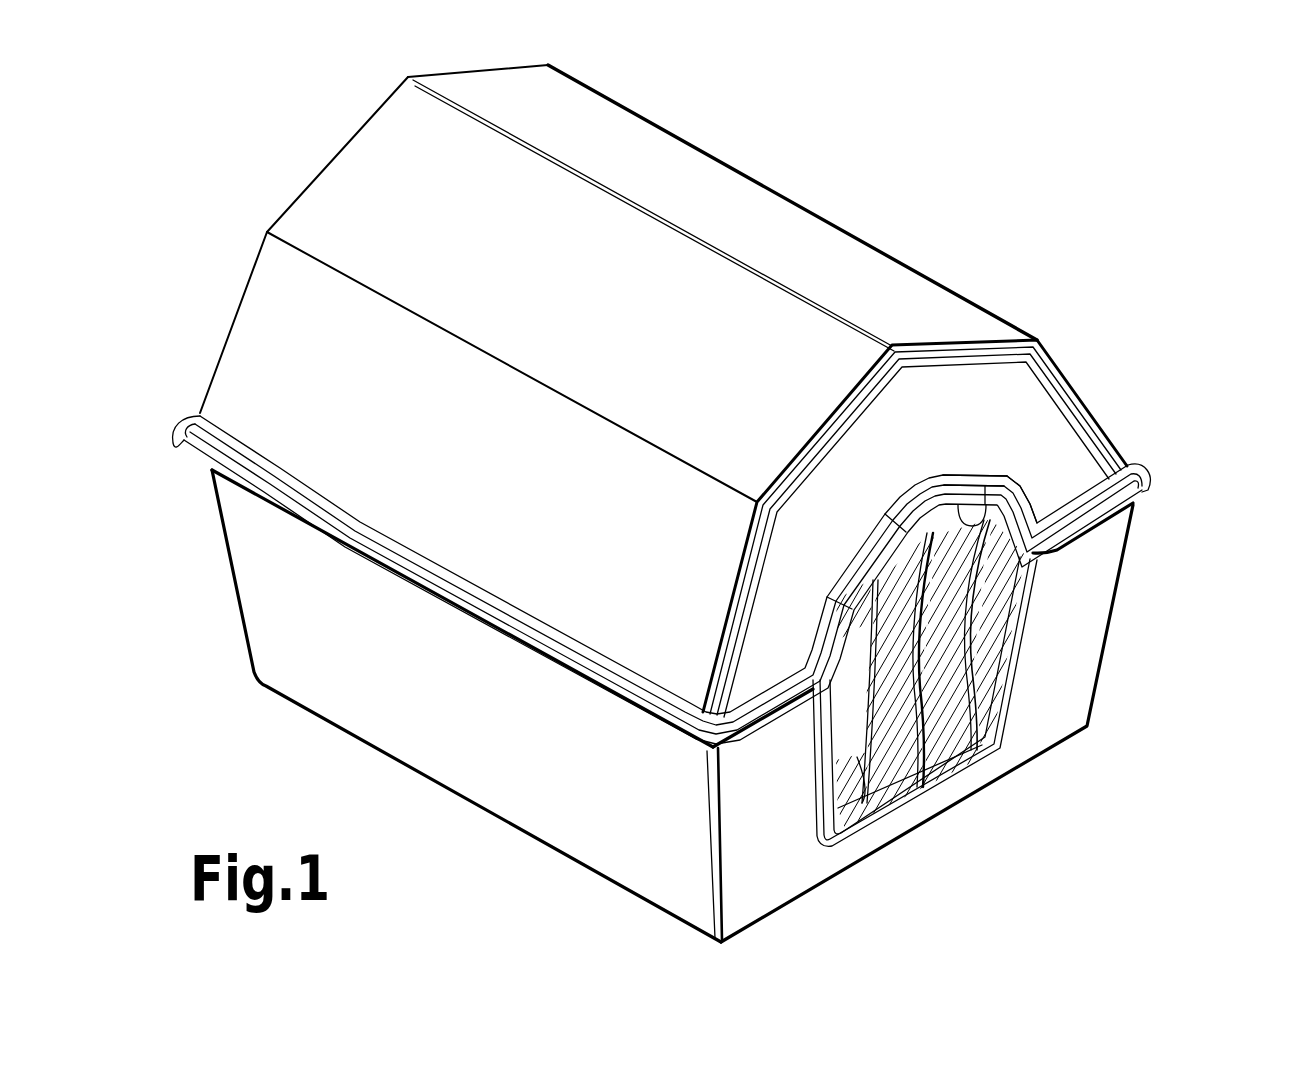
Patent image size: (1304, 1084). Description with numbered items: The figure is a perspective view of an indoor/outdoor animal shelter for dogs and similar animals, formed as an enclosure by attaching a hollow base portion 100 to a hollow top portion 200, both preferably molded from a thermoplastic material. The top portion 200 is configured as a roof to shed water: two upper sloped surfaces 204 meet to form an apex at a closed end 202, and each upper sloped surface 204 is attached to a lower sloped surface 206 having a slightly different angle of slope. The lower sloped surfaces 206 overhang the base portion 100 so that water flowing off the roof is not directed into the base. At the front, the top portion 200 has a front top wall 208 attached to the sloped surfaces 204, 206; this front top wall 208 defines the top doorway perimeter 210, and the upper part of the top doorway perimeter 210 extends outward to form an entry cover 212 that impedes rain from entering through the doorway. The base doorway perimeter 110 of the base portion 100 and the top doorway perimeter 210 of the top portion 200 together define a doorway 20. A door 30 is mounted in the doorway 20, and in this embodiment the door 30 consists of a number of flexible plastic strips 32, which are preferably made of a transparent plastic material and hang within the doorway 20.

The base portion 100 is at (1115, 618).
The top portion 200 is at (1052, 452).
The closed end 202 is at (580, 167).
The upper sloped surfaces 204 is at (748, 232).
The lower sloped surfaces 206 is at (252, 357).
The front top wall 208 is at (980, 380).
The top doorway perimeter 210 is at (994, 507).
The entry cover 212 is at (962, 500).
The base doorway perimeter 110 is at (1003, 685).
The doorway 20 is at (886, 733).
The door 30 is at (920, 718).
The flexible plastic strips 32 is at (915, 618).